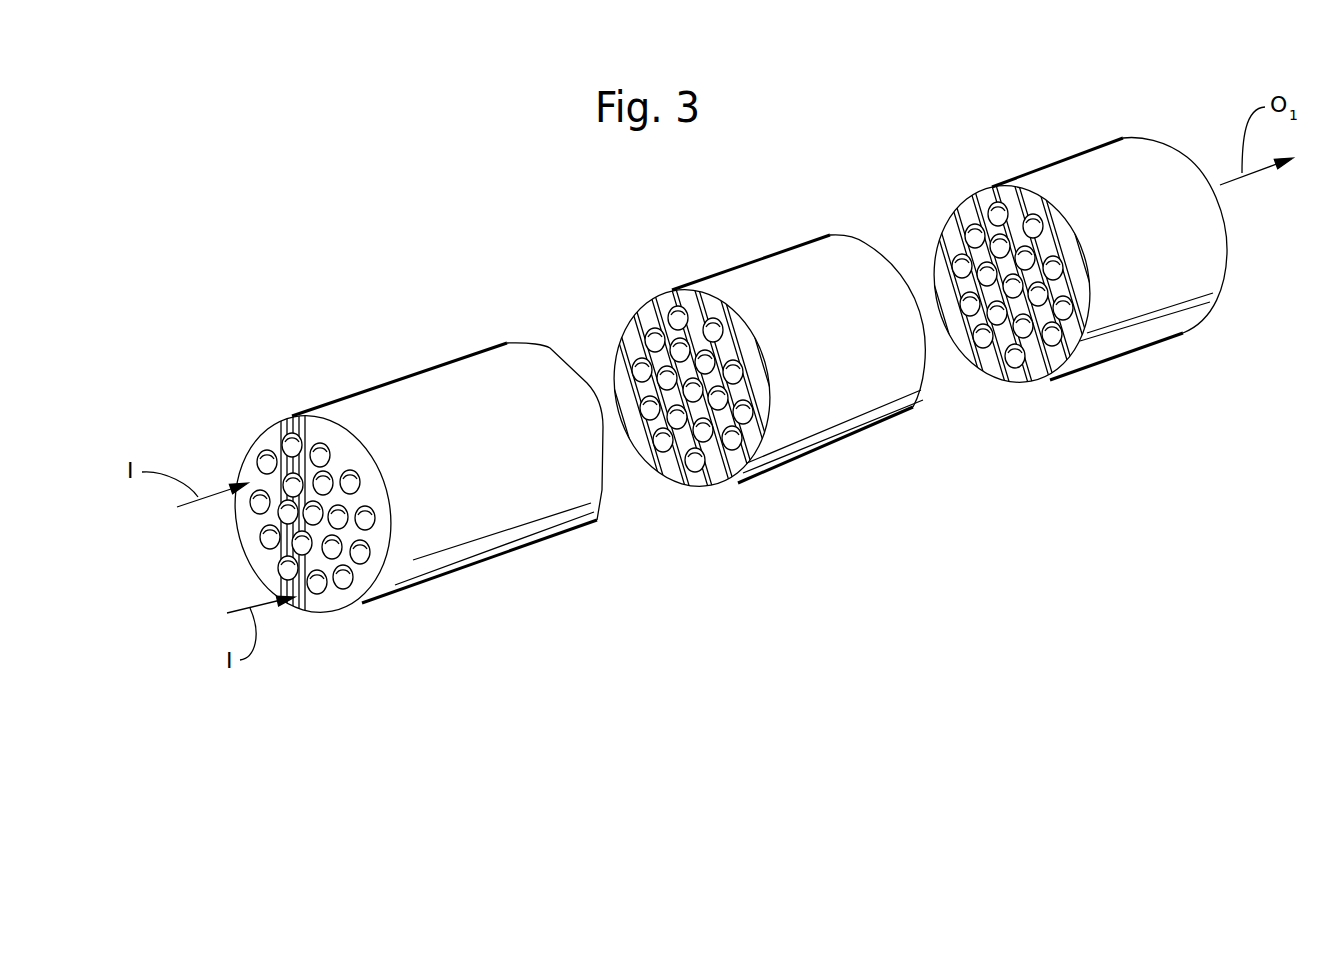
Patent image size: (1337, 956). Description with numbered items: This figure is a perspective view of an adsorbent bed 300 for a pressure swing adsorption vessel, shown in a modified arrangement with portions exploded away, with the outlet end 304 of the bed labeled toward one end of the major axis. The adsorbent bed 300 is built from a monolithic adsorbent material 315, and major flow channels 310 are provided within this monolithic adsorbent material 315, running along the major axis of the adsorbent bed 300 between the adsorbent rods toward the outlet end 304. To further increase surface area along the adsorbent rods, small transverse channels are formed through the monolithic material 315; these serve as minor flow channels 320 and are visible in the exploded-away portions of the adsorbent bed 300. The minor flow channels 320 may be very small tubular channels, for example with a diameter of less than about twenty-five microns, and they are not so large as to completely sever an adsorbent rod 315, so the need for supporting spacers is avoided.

The adsorbent bed 300 is at (372, 300).
The outlet end 304 is at (1177, 148).
The major flow channels 310 is at (300, 445).
The monolithic adsorbent material 315 is at (272, 443).
The minor flow channels 320 is at (733, 345).